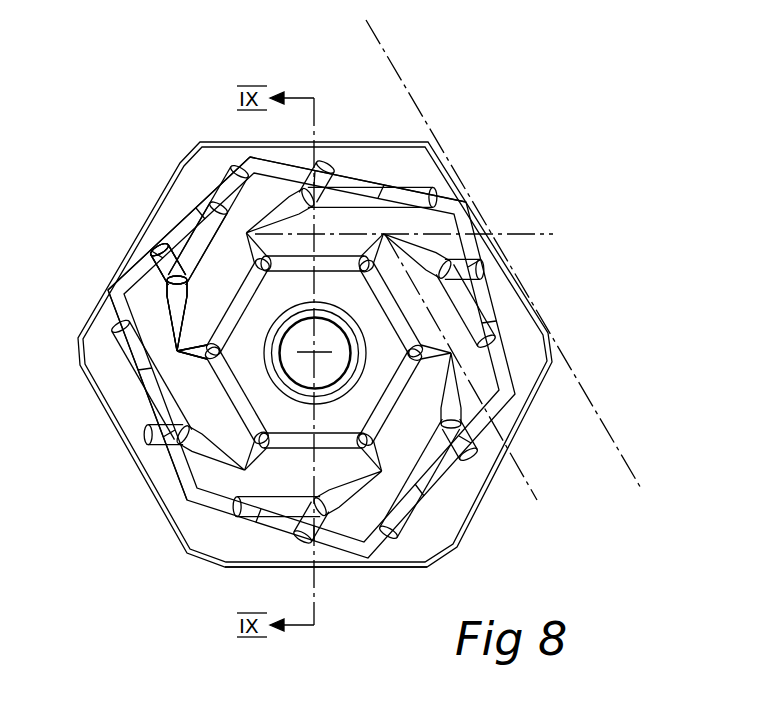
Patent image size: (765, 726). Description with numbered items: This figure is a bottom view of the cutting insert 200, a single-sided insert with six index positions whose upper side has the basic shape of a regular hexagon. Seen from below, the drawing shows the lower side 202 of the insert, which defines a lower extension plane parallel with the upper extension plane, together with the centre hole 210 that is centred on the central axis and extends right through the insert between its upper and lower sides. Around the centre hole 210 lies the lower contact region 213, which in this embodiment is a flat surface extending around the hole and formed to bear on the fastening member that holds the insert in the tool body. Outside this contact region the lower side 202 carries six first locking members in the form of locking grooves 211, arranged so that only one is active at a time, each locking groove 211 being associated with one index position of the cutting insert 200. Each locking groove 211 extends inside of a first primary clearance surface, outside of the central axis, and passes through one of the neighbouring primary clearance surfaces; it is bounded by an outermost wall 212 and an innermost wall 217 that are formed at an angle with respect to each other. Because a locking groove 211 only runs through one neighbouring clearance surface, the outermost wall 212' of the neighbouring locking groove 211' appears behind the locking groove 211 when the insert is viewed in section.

The cutting insert 200 is at (162, 100).
The lower side 202 is at (302, 513).
The centre hole 210 is at (330, 365).
The locking groove 211 is at (311, 309).
The neighbouring locking groove 211' is at (128, 380).
The outermost wall 212 is at (358, 141).
The outermost wall of neighbouring locking groove 212' is at (177, 219).
The lower contact region 213 is at (252, 360).
The innermost wall 217 is at (342, 257).